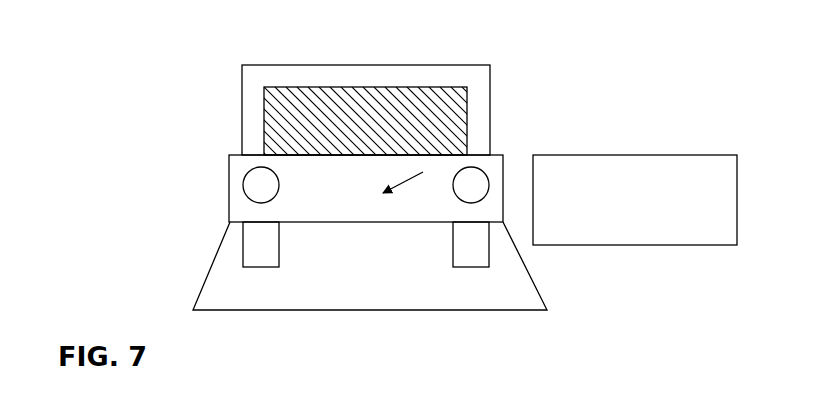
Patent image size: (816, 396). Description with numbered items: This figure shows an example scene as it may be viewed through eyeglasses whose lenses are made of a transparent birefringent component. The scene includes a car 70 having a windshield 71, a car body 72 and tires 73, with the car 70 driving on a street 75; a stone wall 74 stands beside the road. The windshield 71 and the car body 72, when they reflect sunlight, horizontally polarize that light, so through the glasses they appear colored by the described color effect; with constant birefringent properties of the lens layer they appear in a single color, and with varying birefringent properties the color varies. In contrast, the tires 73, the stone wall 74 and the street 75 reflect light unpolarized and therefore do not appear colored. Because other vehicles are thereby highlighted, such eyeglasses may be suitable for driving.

The car 70 is at (495, 83).
The windshield 71 is at (366, 109).
The car body 72 is at (242, 209).
The tires 73 is at (260, 244).
The stone wall 74 is at (609, 155).
The street 75 is at (363, 310).